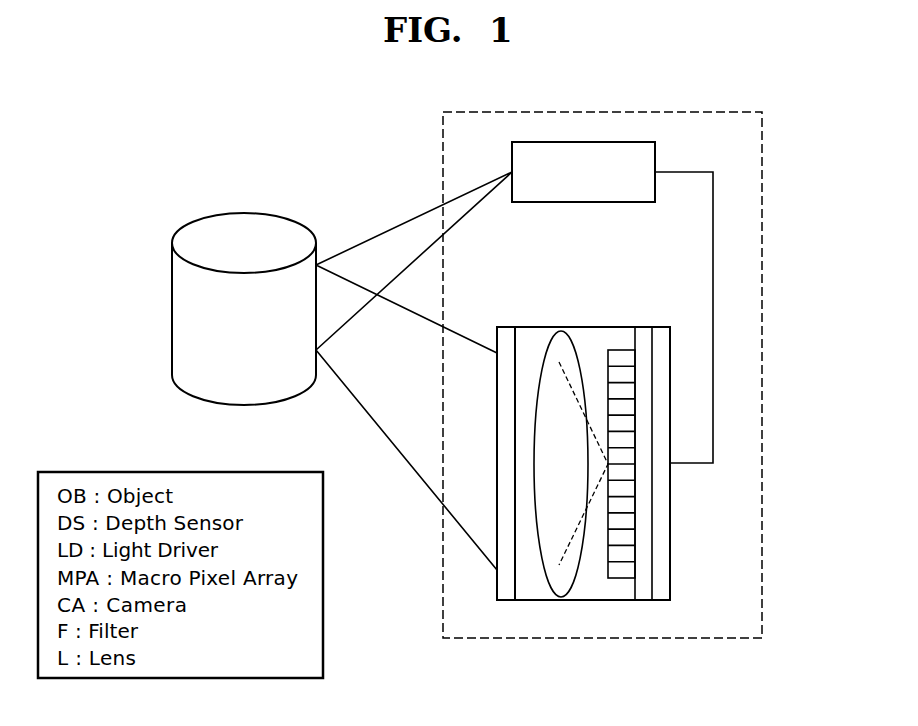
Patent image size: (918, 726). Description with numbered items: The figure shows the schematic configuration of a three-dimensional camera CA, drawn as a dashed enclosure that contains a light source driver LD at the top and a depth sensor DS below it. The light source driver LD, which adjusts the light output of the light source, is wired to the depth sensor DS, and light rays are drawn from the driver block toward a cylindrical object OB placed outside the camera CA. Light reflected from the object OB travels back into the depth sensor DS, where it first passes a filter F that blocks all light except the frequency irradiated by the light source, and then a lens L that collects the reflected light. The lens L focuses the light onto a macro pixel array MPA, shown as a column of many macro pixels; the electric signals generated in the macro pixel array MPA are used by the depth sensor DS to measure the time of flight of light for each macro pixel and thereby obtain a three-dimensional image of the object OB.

The object OB is at (246, 213).
The depth sensor DS is at (642, 590).
The light source driver LD is at (582, 142).
The macro pixel array MPA is at (619, 573).
The 3D camera CA is at (762, 155).
The filter F is at (507, 593).
The lens L is at (557, 595).